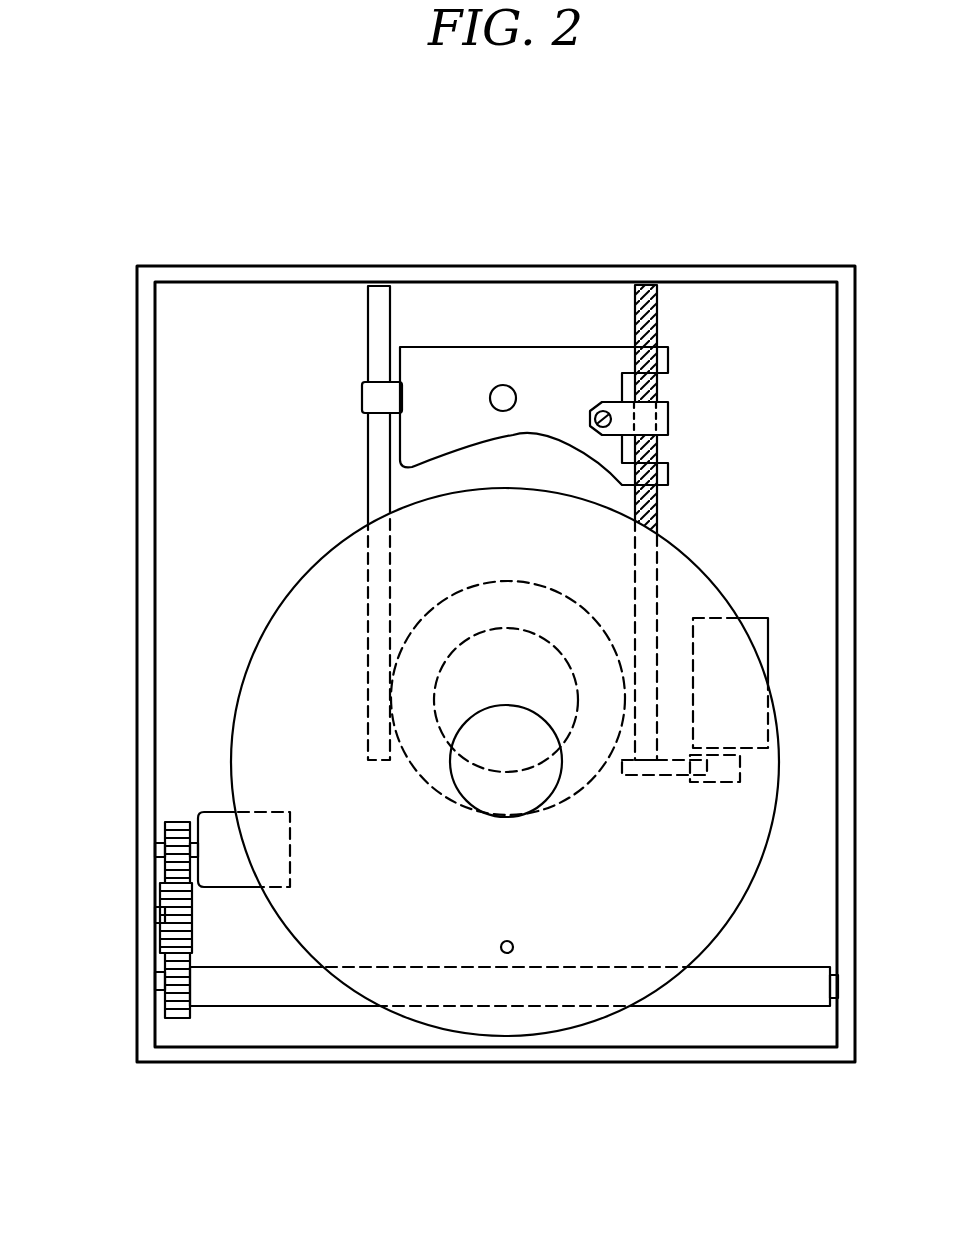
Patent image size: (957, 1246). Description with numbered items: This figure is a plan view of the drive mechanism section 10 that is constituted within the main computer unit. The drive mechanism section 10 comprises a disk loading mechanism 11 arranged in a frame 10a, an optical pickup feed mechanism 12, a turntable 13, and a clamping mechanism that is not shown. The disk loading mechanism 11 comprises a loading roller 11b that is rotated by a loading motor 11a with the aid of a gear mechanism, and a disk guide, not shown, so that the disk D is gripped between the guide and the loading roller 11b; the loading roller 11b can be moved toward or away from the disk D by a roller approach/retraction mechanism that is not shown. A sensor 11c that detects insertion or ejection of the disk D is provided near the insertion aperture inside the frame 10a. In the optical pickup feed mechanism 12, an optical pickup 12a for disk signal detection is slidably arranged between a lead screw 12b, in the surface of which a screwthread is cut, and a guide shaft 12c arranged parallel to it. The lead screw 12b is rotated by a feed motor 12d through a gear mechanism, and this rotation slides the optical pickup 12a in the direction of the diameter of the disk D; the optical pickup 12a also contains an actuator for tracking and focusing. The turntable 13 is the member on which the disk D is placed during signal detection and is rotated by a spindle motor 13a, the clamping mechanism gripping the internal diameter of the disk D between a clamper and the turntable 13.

The drive mechanism section 10 is at (112, 248).
The frame 10a is at (137, 375).
The disk loading mechanism 11 is at (126, 803).
The loading motor 11a is at (218, 827).
The loading roller 11b is at (233, 993).
The sensor 11c is at (512, 940).
The optical pickup feed mechanism 12 is at (808, 258).
The optical pickup 12a is at (457, 368).
The lead screw 12b is at (657, 330).
The guide shaft 12c is at (380, 462).
The feed motor 12d is at (758, 620).
The turntable 13 is at (532, 582).
The spindle motor 13a is at (473, 638).
The disk D is at (763, 820).